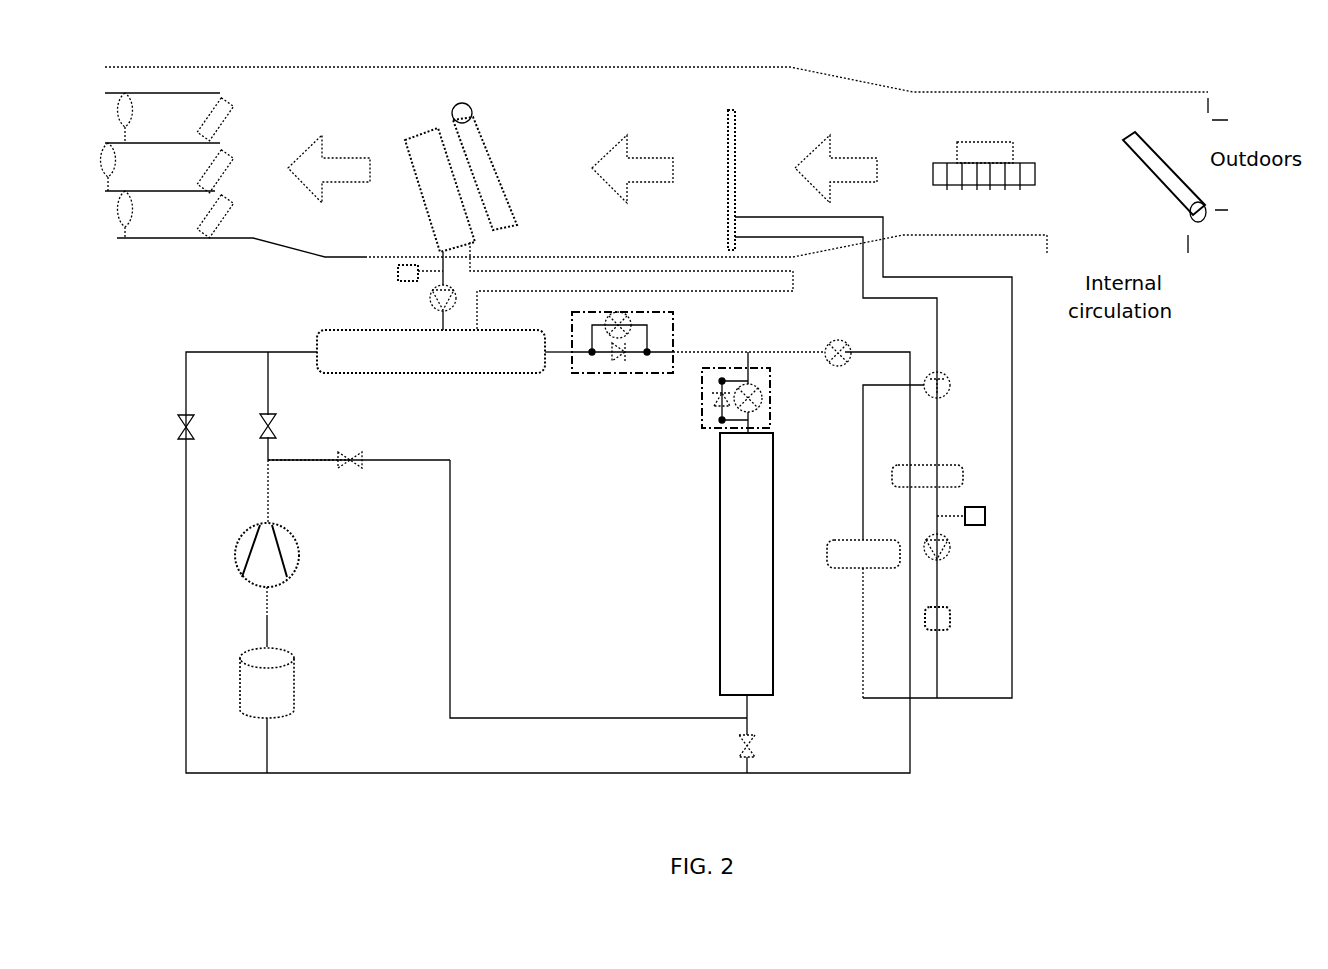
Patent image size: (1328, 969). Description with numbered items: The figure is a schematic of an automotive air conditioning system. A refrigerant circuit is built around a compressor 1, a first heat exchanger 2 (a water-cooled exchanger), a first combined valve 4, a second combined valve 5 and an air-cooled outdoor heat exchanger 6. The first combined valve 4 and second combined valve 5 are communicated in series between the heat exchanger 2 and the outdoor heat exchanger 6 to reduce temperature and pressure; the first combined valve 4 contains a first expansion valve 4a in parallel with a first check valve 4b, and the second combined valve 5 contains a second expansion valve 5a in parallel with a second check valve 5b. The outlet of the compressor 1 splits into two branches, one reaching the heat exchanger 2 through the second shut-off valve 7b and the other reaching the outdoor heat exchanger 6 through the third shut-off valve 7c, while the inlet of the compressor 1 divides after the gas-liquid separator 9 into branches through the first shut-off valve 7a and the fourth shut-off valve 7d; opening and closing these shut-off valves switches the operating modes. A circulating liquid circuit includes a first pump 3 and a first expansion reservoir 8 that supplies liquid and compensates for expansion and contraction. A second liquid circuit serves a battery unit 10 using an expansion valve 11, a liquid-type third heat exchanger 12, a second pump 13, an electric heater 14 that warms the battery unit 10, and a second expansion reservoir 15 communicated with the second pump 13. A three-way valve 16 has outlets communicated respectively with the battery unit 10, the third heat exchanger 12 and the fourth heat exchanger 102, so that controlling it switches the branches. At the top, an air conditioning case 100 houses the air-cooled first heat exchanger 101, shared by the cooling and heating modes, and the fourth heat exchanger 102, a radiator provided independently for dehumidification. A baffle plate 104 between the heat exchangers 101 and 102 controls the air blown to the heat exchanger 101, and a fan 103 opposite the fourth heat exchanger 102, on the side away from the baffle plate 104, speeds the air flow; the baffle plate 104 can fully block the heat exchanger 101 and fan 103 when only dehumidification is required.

The air conditioning case 100 is at (667, 64).
The first heat exchanger 101 is at (427, 175).
The fourth heat exchanger 102 is at (730, 148).
The fan 103 is at (1007, 152).
The baffle plate 104 is at (520, 160).
The compressor 1 is at (286, 552).
The first heat exchanger 2 is at (393, 363).
The first pump 3 is at (431, 298).
The first combined valve 4 is at (642, 361).
The first expansion valve 4a is at (610, 338).
The first check valve 4b is at (620, 362).
The second combined valve 5 is at (736, 406).
The second expansion valve 5a is at (770, 404).
The second check valve 5b is at (712, 412).
The outdoor heat exchanger 6 is at (738, 552).
The first shut-off valve 7a is at (183, 415).
The second shut-off valve 7b is at (268, 412).
The third shut-off valve 7c is at (360, 460).
The fourth shut-off valve 7d is at (742, 752).
The first expansion reservoir 8 is at (398, 271).
The gas-liquid separator 9 is at (282, 683).
The battery unit 10 is at (837, 552).
The expansion valve 11 is at (860, 325).
The third heat exchanger 12 is at (970, 455).
The second pump 13 is at (945, 552).
The heater 14 is at (945, 620).
The second expansion reservoir 15 is at (992, 500).
The three-way valve 16 is at (950, 385).